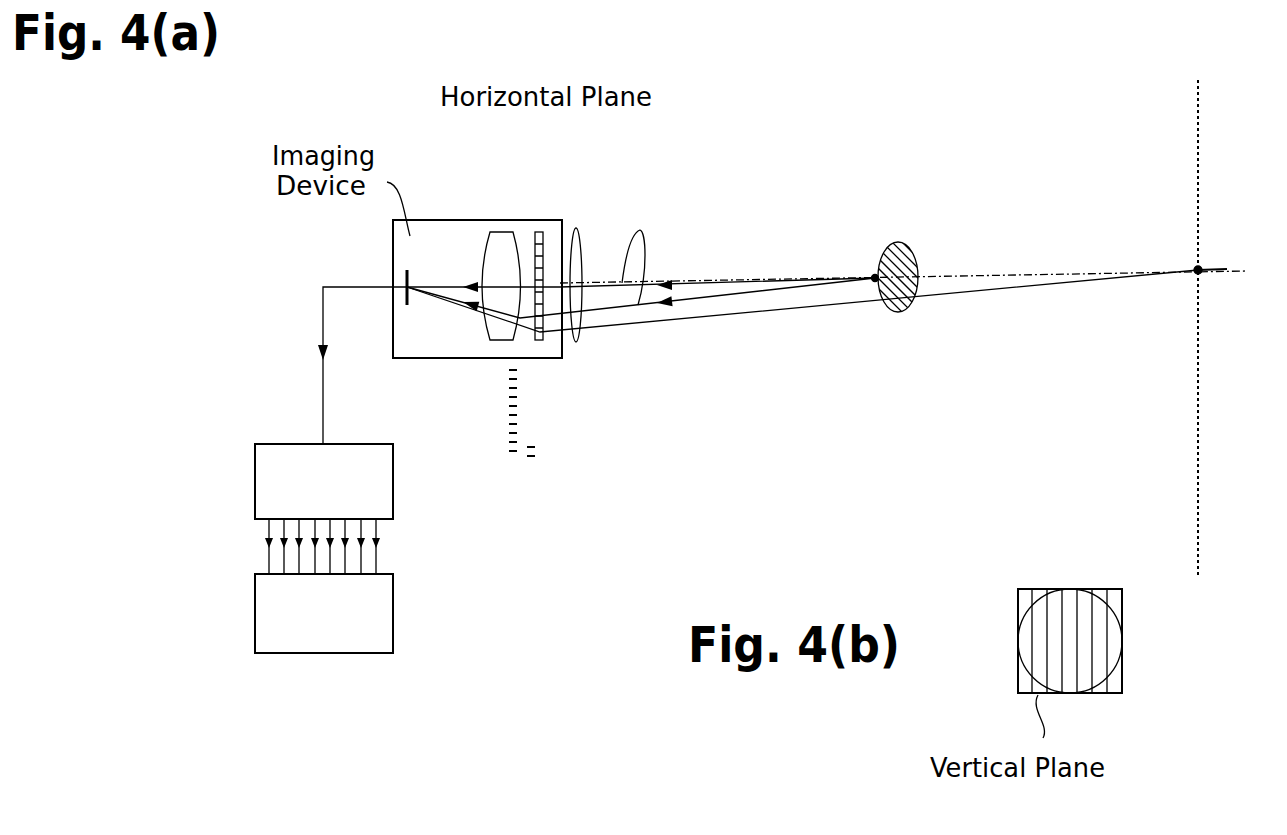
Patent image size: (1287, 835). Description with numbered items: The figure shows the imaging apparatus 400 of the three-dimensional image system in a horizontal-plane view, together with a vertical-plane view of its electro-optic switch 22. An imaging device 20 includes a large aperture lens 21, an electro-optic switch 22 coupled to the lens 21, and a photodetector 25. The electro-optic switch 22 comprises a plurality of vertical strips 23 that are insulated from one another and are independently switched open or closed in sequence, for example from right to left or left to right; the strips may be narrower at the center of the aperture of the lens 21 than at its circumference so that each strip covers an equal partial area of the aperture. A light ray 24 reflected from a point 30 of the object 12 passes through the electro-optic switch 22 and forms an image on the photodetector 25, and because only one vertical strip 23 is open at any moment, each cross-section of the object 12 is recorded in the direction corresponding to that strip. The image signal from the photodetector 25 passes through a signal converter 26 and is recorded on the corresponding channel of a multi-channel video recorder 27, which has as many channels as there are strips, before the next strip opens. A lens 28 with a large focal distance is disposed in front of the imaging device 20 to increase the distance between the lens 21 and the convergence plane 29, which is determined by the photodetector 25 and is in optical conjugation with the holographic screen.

In FIG. 4A, the imaging apparatus 400 is at (800, 100).
In FIG. 4A, the imaging device 20 is at (433, 221).
In FIG. 4A, the large aperture lens 21 is at (518, 233).
In FIG. 4B, the large aperture lens 21 is at (1110, 672).
In FIG. 4A, the electro-optic switch 22 is at (543, 342).
In FIG. 4B, the electro-optic switch 22 is at (1018, 643).
In FIG. 4B, the vertical strips 23 is at (1107, 589).
In FIG. 4A, the light ray 24 is at (641, 230).
In FIG. 4A, the photodetector 25 is at (405, 284).
In FIG. 4A, the signal converter 26 is at (254, 472).
In FIG. 4A, the multi-channel video recorder 27 is at (254, 608).
In FIG. 4A, the lens with a large focal distance 28 is at (585, 340).
In FIG. 4A, the convergence plane 29 is at (1205, 276).
In FIG. 4A, the point of object 30 is at (873, 275).
In FIG. 4A, the object 12 is at (916, 248).